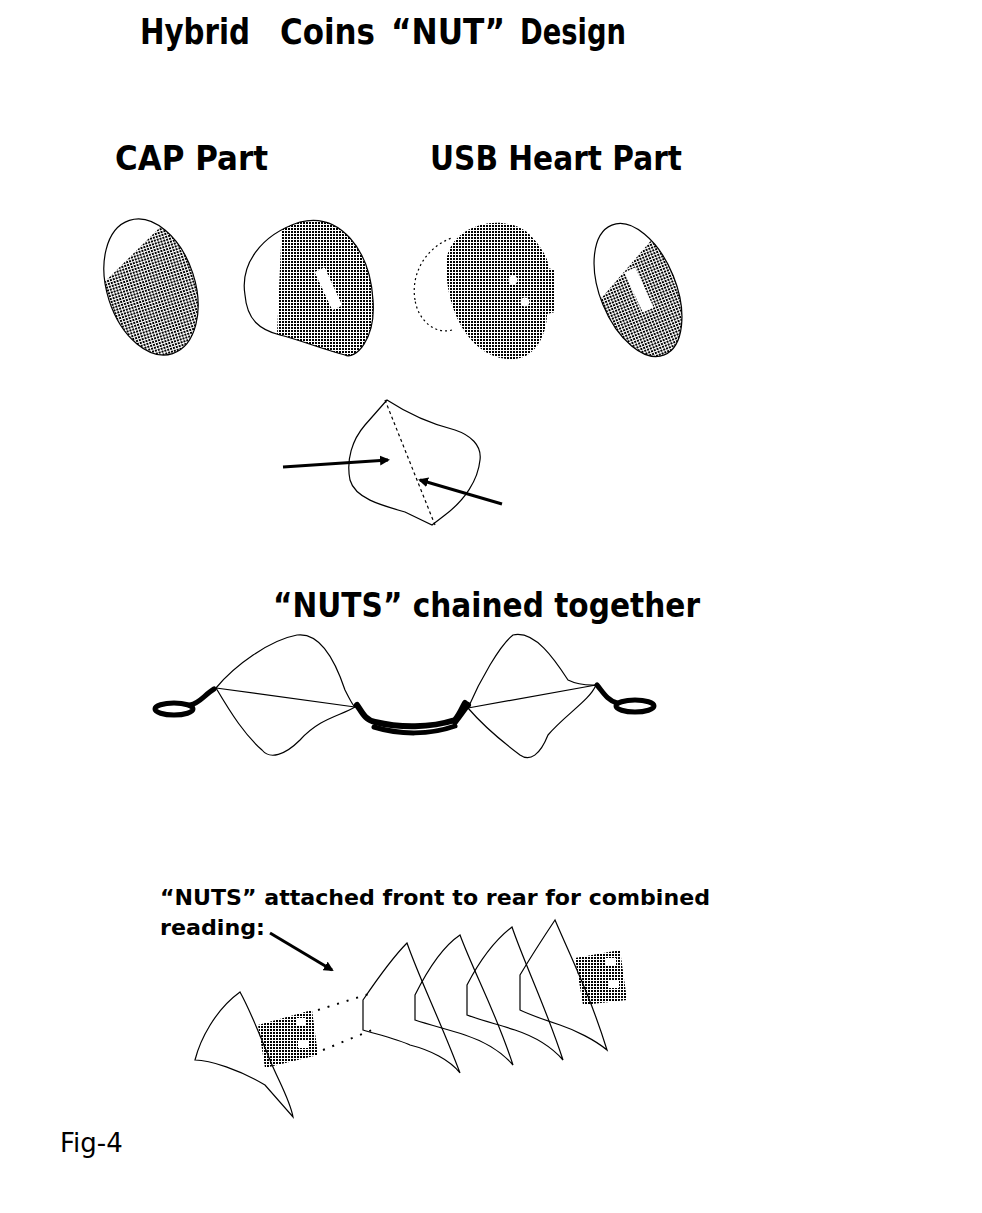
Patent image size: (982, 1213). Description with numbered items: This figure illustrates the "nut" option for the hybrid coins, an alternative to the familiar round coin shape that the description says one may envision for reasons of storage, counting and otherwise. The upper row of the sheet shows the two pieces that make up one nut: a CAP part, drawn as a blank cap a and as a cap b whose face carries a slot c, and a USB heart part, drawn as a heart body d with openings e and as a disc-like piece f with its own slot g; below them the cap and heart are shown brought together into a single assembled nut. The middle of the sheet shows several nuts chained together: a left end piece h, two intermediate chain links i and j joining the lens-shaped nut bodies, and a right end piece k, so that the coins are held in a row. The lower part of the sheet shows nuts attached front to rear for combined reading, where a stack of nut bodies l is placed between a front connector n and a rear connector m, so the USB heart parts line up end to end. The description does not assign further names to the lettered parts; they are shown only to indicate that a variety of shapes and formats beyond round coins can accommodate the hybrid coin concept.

The cap part blank a is at (122, 248).
The cap part with slot b is at (300, 250).
The slot in cap part c is at (327, 296).
The USB heart part d is at (460, 270).
The holes in USB heart part e is at (516, 322).
The USB heart part disc f is at (624, 243).
The slot in USB heart part g is at (642, 291).
The left chain end loop h is at (195, 726).
The chain link i is at (372, 735).
The chain link j is at (466, 735).
The right chain end loop k is at (627, 724).
The stacked NUTS l is at (382, 1012).
The rear USB connector m is at (607, 988).
The front USB connector n is at (282, 1040).